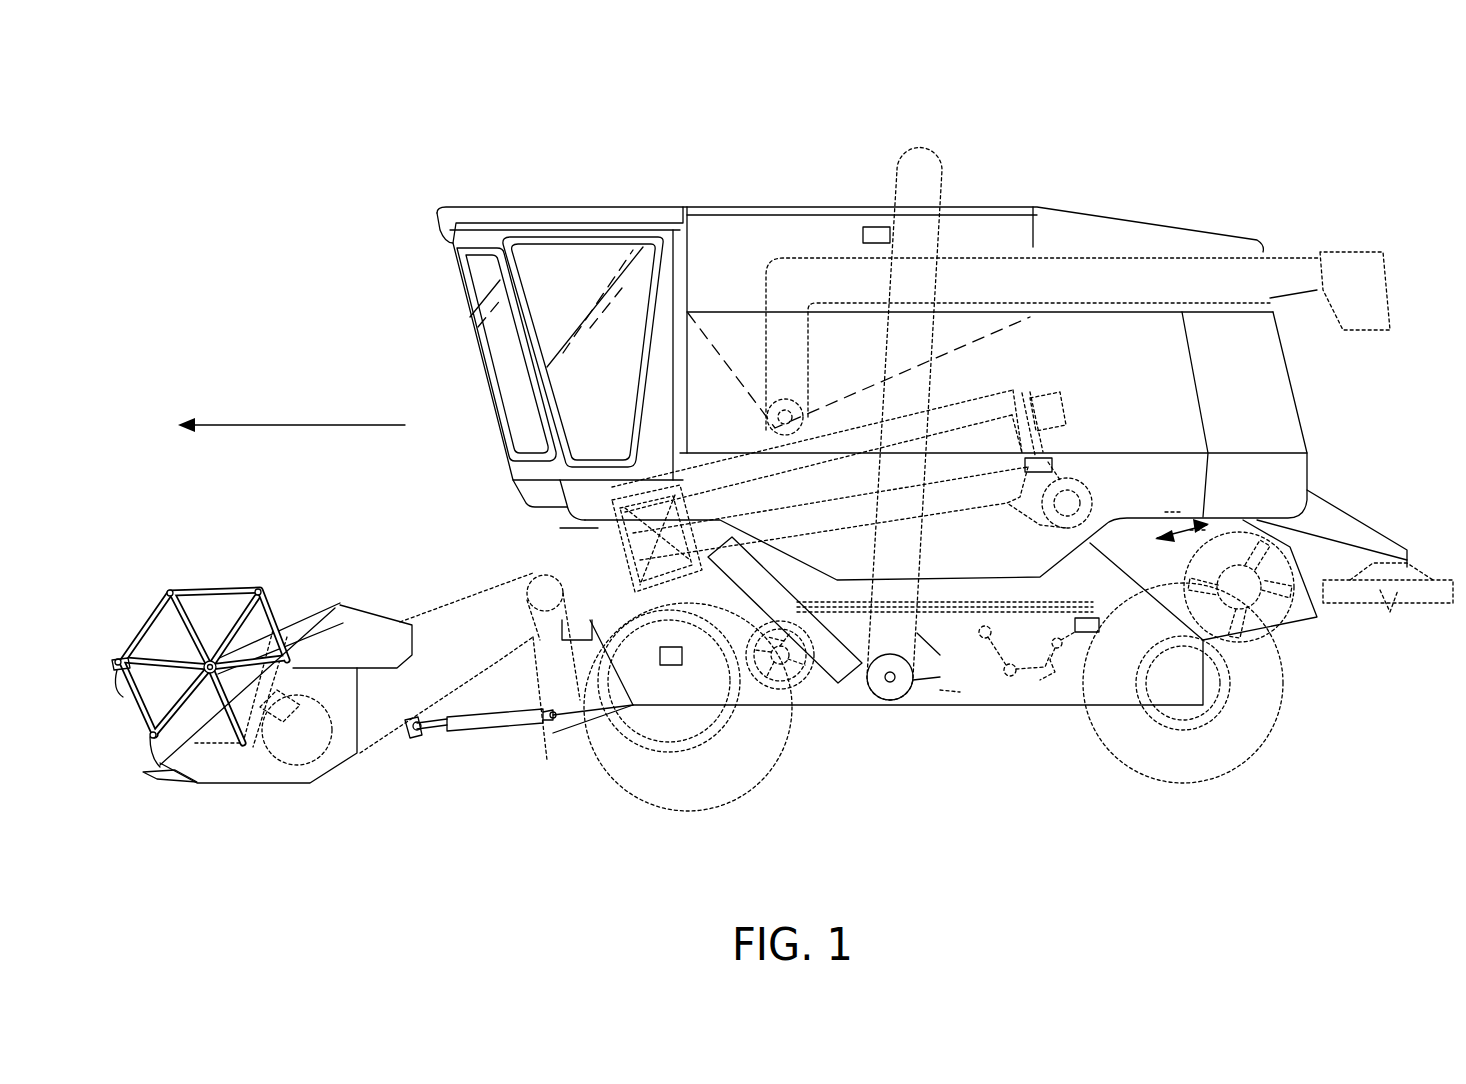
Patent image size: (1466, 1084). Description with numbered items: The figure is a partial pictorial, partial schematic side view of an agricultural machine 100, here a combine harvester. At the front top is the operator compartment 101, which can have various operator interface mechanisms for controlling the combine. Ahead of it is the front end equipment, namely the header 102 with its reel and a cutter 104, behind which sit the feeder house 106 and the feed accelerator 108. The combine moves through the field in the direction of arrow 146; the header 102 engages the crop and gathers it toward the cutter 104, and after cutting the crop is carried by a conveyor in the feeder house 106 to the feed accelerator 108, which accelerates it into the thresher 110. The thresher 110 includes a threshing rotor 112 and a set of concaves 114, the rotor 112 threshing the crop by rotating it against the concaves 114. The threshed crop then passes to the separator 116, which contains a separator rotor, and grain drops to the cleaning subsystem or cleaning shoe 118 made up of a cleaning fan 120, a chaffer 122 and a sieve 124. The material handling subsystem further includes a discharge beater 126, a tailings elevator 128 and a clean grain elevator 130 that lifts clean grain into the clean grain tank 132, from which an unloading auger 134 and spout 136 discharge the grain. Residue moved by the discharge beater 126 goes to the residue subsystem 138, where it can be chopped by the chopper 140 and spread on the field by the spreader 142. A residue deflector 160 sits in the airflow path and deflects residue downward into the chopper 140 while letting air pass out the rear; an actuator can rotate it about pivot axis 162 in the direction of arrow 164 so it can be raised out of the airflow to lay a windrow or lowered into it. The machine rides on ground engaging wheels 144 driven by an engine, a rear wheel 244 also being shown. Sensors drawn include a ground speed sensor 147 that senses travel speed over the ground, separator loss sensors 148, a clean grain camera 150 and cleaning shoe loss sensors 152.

The agricultural machine 100 is at (1305, 75).
The operator compartment 101 is at (565, 207).
The header 102 is at (228, 590).
The cutter 104 is at (201, 795).
The feeder house 106 is at (445, 595).
The feed accelerator 108 is at (598, 548).
The thresher 110 is at (960, 393).
The threshing rotor 112 is at (1022, 387).
The concaves 114 is at (1058, 470).
The separator 116 is at (950, 523).
The cleaning subsystem 118 is at (1092, 656).
The cleaning fan 120 is at (750, 677).
The chaffer 122 is at (1108, 538).
The sieve 124 is at (1040, 673).
The discharge beater 126 is at (1090, 492).
The tailings elevator 128 is at (827, 687).
The clean grain elevator 130 is at (945, 697).
The clean grain tank 132 is at (724, 298).
The unloading auger 134 is at (805, 417).
The spout 136 is at (1350, 250).
The residue subsystem 138 is at (1368, 510).
The chopper 140 is at (1243, 633).
The spreader 142 is at (1350, 603).
The ground engaging wheels 144 is at (560, 767).
The arrow 146 is at (291, 415).
The ground speed sensor 147 is at (667, 665).
The separator loss sensors 148 is at (1073, 455).
The clean grain camera 150 is at (870, 227).
The cleaning shoe loss sensors 152 is at (1098, 626).
The residue deflector 160 is at (1173, 508).
The pivot axis 162 is at (1187, 547).
The arrow 164 is at (1200, 533).
The rear wheel 244 is at (1150, 777).